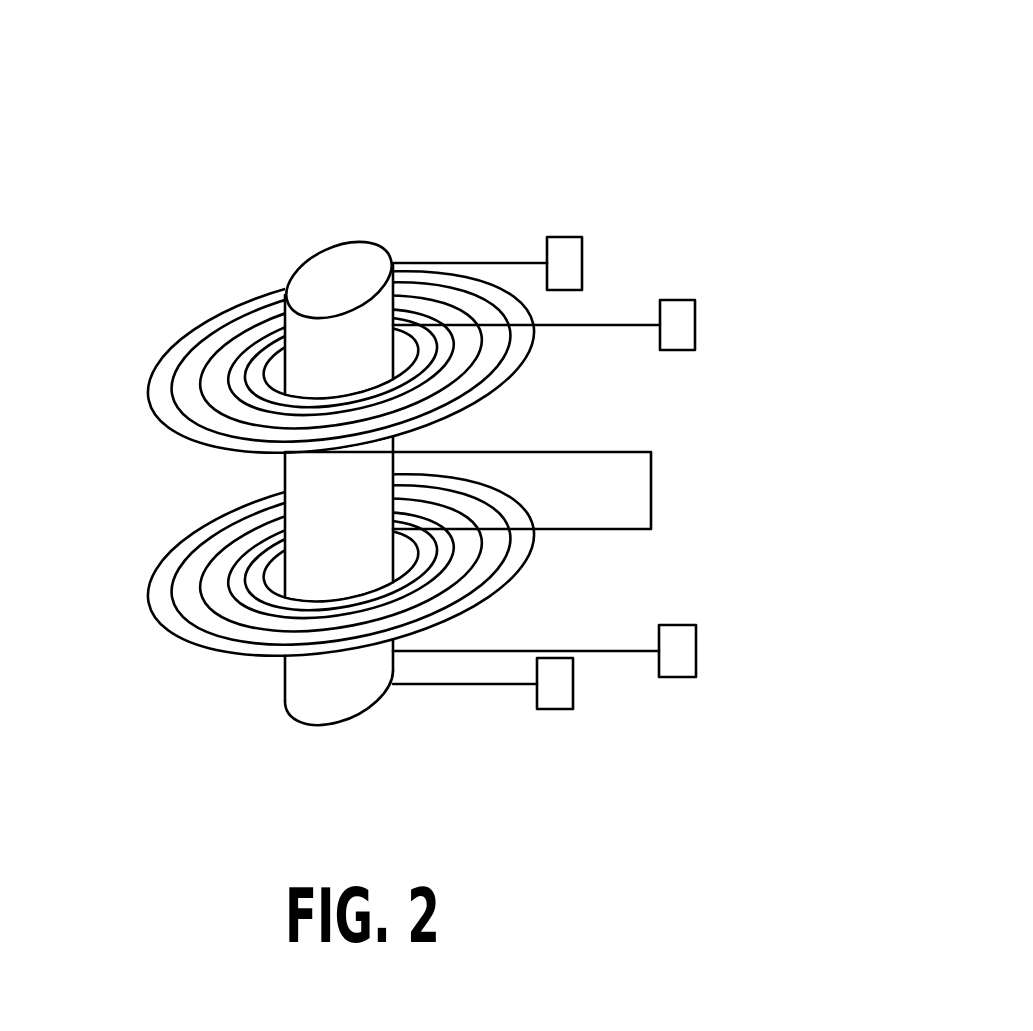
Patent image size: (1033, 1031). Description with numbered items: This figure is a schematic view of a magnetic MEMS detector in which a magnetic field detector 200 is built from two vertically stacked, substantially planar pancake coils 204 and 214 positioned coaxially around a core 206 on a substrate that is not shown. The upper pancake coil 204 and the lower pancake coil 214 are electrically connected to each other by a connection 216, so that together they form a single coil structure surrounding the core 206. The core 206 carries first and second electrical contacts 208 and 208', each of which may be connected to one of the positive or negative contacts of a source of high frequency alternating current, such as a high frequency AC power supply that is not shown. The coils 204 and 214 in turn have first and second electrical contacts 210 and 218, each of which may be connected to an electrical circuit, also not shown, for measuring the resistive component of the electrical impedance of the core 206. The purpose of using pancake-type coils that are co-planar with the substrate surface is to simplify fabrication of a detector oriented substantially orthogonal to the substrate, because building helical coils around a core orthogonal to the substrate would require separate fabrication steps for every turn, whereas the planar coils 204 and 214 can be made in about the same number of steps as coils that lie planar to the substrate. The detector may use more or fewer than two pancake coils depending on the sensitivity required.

The magnetic field detector 200 is at (783, 120).
The pancake coil 204 is at (178, 382).
The core 206 is at (305, 262).
The first electrical contact 208 is at (545, 248).
The second electrical contact 208' is at (545, 700).
The first electrical contact 210 is at (695, 325).
The pancake coil 214 is at (178, 593).
The connection 216 is at (651, 483).
The second electrical contact 218 is at (696, 650).